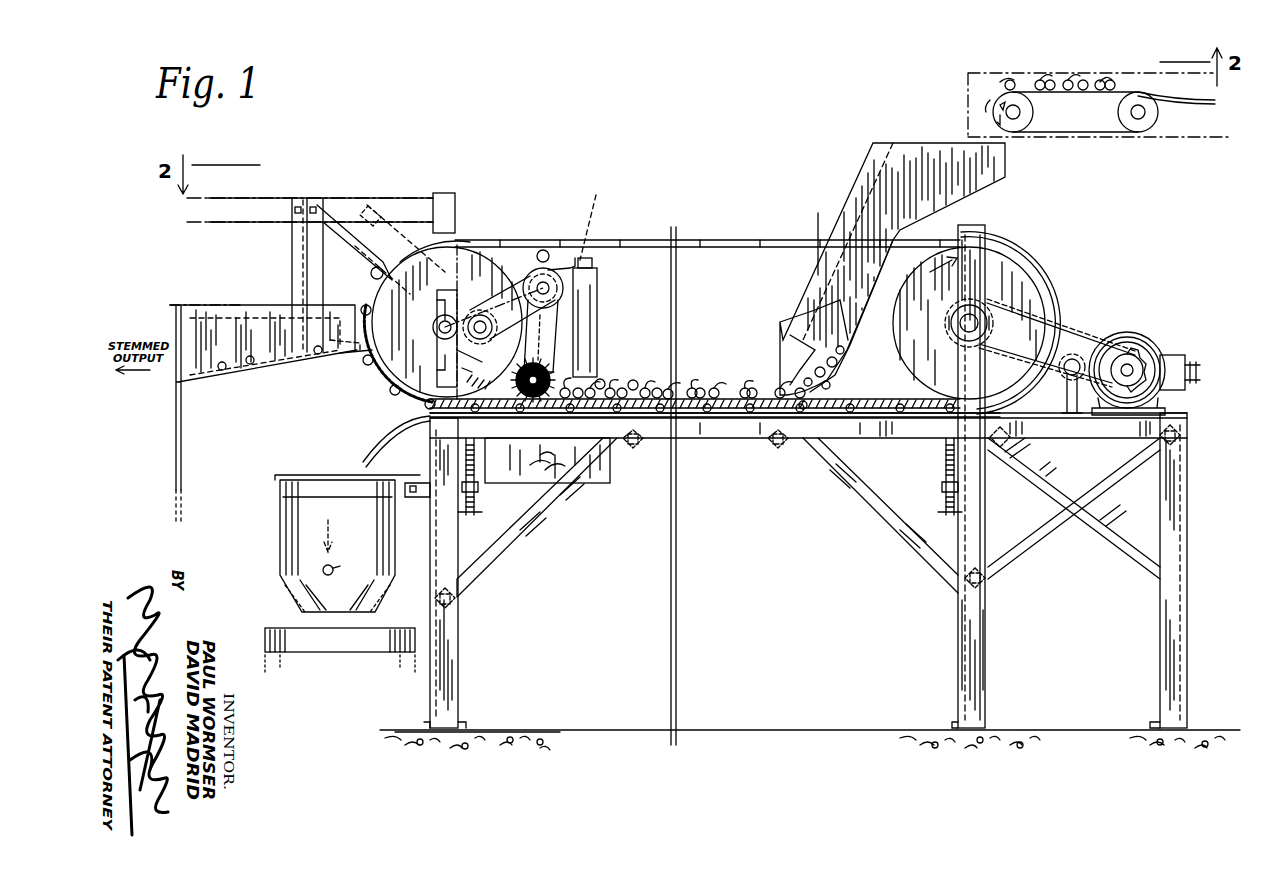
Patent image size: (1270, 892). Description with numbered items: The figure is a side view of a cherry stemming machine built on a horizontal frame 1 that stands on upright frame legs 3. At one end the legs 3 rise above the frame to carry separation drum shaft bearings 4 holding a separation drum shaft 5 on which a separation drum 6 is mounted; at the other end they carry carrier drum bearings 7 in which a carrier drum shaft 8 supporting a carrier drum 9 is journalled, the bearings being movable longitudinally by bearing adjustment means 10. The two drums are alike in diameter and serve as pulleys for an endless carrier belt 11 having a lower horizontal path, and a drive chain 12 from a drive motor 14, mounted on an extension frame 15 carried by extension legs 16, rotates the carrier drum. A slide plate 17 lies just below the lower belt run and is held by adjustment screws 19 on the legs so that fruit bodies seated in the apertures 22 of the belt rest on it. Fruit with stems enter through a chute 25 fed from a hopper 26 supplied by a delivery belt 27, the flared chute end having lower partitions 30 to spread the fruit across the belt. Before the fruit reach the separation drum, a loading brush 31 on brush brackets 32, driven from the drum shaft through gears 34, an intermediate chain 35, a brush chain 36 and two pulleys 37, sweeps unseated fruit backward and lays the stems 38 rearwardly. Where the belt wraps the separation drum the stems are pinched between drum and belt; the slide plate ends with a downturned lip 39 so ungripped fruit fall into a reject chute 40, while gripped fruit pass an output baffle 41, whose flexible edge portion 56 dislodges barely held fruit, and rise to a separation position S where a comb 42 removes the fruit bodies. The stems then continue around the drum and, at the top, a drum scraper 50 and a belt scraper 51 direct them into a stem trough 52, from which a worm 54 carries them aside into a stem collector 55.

The horizontal frame 1 is at (742, 440).
The upright frame legs 3 is at (460, 624).
The separation drum shaft bearings 4 is at (388, 395).
The separation drum shaft 5 is at (377, 372).
The separation drum 6 is at (468, 268).
The carrier drum bearings 7 is at (980, 290).
The carrier drum shaft 8 is at (994, 310).
The carrier drum 9 is at (977, 234).
The bearing adjustment means 10 is at (1060, 330).
The endless carrier belt 11 is at (664, 245).
The drive chain 12 is at (1078, 360).
The drive motor 14 is at (1158, 350).
The extension frame 15 is at (1108, 430).
The extension legs 16 is at (1162, 600).
The slide plate 17 is at (868, 440).
The adjustment screws 19 is at (478, 500).
The apertures 22 is at (712, 240).
The chute 25 is at (819, 235).
The hopper 26 is at (996, 162).
The delivery belt 27 is at (1068, 100).
The lower partitions 30 is at (808, 325).
The loading brush 31 is at (555, 378).
The brush brackets 32 is at (597, 280).
The gears 34 is at (482, 308).
The intermediate chain 35 is at (492, 275).
The brush chain 36 is at (560, 345).
The pulleys 37 is at (596, 221).
The stems 38 is at (632, 386).
The downturned lip 39 is at (378, 440).
The reject chute 40 is at (288, 538).
The output baffle 41 is at (358, 352).
The comb 42 is at (372, 268).
The drum scraper 50 is at (536, 268).
The belt scraper 51 is at (548, 250).
The stem trough 52 is at (592, 262).
The worm 54 is at (572, 257).
The stem collector 55 is at (612, 477).
The flexible edge portion 56 is at (365, 360).
The separation position S is at (354, 278).